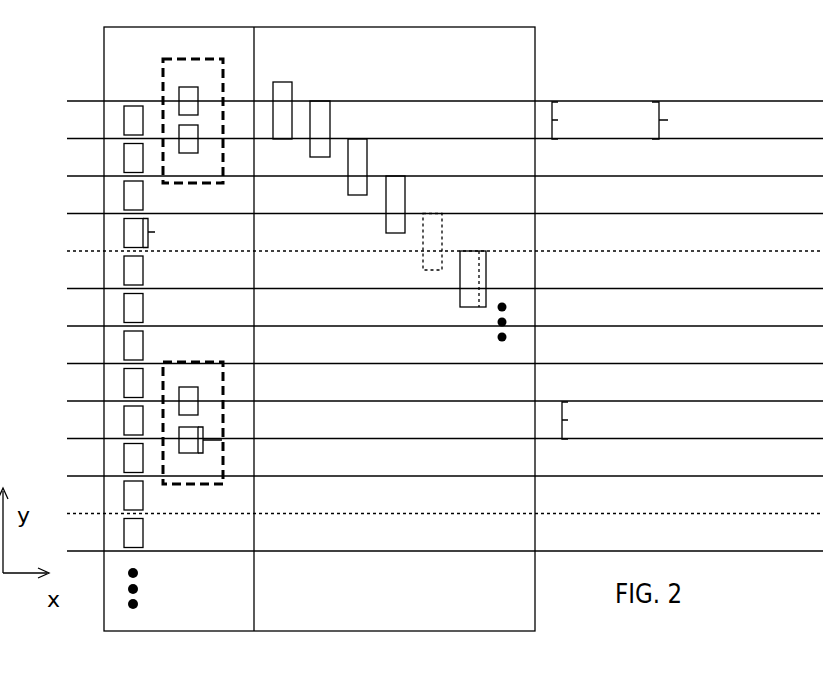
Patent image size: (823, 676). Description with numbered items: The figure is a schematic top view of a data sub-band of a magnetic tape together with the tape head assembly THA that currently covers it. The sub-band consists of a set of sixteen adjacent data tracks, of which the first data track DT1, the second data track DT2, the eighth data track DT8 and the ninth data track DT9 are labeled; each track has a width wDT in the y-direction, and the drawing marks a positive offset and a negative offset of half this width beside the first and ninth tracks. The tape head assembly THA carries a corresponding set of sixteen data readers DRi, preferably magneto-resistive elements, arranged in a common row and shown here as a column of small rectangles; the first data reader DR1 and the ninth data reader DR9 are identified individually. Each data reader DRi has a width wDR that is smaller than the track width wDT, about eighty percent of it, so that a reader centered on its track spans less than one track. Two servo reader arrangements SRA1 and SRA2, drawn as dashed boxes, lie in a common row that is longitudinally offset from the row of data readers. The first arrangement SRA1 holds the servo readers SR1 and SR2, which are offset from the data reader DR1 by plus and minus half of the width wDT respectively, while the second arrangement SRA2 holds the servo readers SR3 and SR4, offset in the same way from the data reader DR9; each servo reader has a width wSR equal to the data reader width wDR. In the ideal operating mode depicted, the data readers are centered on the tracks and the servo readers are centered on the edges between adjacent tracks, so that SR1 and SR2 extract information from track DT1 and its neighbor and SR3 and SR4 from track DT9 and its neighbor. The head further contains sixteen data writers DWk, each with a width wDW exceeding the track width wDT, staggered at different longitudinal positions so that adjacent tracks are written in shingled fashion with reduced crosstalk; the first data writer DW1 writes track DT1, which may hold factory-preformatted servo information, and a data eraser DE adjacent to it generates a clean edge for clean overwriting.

The tape head assembly THA is at (535, 82).
The first data track DT1 is at (445, 120).
The second data track DT2 is at (445, 160).
The eighth data track DT8 is at (445, 381).
The ninth data track DT9 is at (445, 420).
The width of data track wDT is at (652, 120).
The first data reader DR1 is at (124, 118).
The ninth data reader DR9 is at (124, 420).
The data reader DRi is at (130, 270).
The width of data reader wDR is at (169, 233).
The first servo reader arrangement SRA1 is at (163, 69).
The second servo reader arrangement SRA2 is at (223, 484).
The first servo reader SR1 is at (198, 102).
The second servo reader SR2 is at (198, 152).
The third servo reader SR3 is at (198, 388).
The fourth servo reader SR4 is at (198, 428).
The width of servo reader wSR is at (233, 440).
The data eraser DE is at (291, 138).
The first data writer DW1 is at (330, 110).
The data writer DWk is at (423, 213).
The width of data writer wDW is at (486, 278).